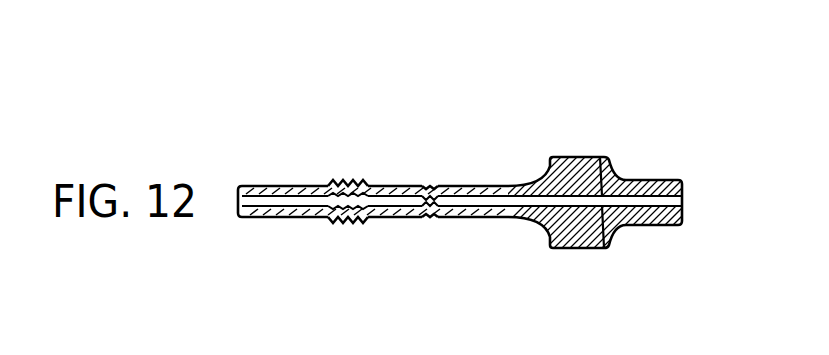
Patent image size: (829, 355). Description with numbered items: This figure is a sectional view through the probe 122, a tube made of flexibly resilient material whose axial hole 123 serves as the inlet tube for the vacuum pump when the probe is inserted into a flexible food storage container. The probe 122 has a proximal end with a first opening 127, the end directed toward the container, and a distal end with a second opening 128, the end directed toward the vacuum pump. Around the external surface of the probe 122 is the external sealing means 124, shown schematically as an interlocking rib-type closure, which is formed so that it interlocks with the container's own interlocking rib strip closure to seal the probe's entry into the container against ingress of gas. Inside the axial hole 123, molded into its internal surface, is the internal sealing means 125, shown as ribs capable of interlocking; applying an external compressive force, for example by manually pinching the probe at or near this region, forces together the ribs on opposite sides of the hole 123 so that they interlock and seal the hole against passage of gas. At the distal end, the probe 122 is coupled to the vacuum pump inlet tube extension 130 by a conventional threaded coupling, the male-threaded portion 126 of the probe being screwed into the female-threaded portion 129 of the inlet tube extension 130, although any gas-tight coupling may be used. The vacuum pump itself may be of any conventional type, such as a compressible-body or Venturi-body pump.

The probe 122 is at (462, 186).
The axial hole 123 is at (237, 203).
The external sealing means 124 is at (347, 181).
The internal sealing means 125 is at (432, 207).
The male-threaded portion 126 is at (561, 160).
The first opening 127 is at (237, 193).
The second opening 128 is at (610, 247).
The female-threaded portion 129 is at (608, 153).
The vacuum pump inlet tube extension 130 is at (655, 178).